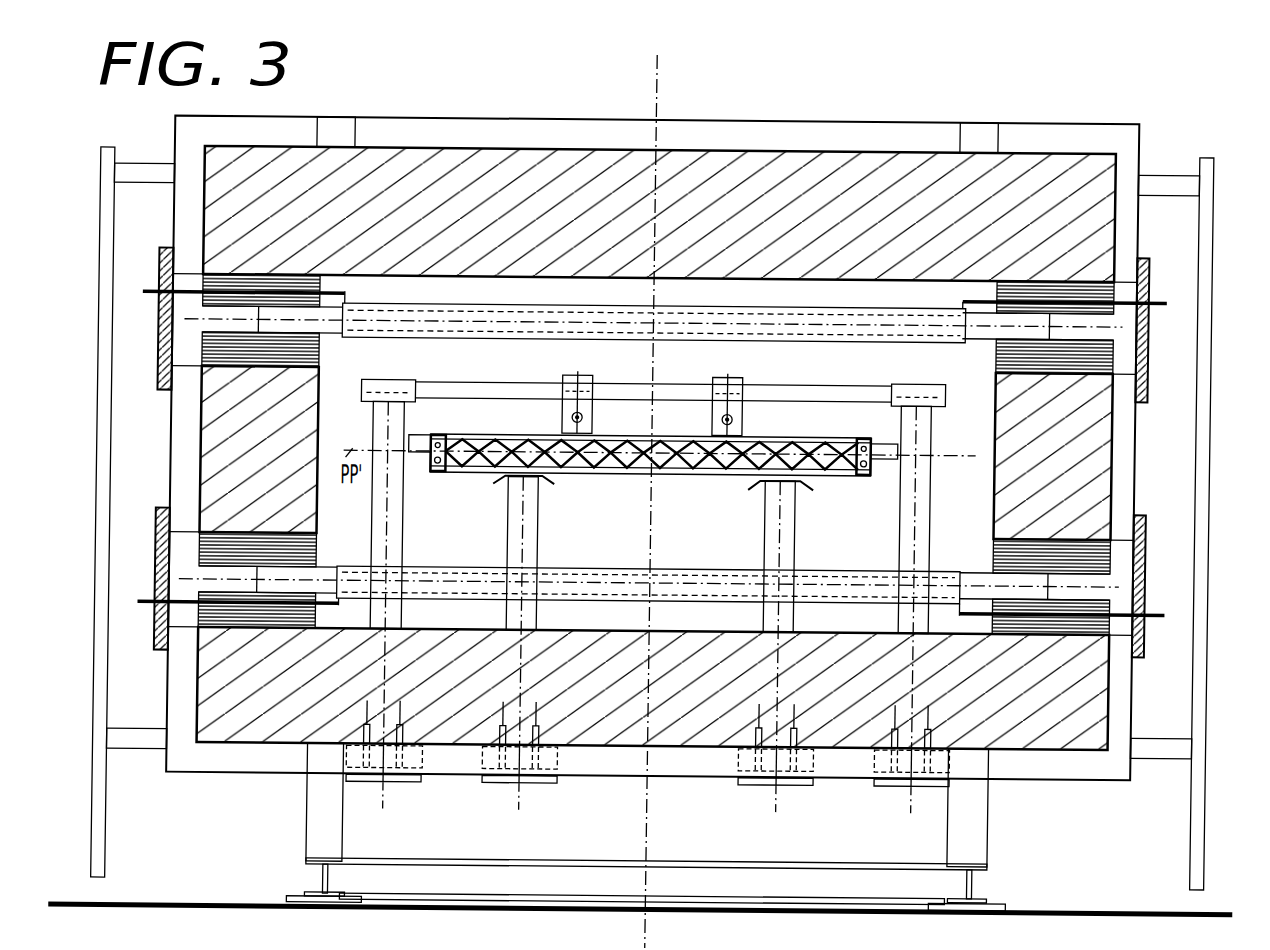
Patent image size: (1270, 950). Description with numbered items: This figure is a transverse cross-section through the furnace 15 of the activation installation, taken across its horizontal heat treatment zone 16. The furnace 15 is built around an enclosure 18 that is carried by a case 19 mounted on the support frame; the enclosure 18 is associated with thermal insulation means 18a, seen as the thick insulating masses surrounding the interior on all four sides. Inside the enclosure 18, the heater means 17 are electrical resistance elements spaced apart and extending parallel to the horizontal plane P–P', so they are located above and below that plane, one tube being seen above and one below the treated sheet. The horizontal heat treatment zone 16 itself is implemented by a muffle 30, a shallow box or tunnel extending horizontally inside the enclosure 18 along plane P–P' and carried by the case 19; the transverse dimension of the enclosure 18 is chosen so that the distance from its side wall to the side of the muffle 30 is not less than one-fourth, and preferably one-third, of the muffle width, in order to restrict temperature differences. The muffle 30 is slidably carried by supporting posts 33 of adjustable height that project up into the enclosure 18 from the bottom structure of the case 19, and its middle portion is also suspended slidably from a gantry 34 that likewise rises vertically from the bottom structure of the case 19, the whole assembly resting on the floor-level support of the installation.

The furnace 15 is at (1146, 156).
The horizontal heat treatment zone 16 is at (819, 375).
The heater means 17 is at (885, 341).
The enclosure 18 is at (1022, 144).
The thermal insulation means 18a is at (226, 409).
The case 19 is at (969, 133).
The muffle 30 is at (671, 485).
The supporting posts 33 is at (550, 480).
The gantry 34 is at (516, 385).